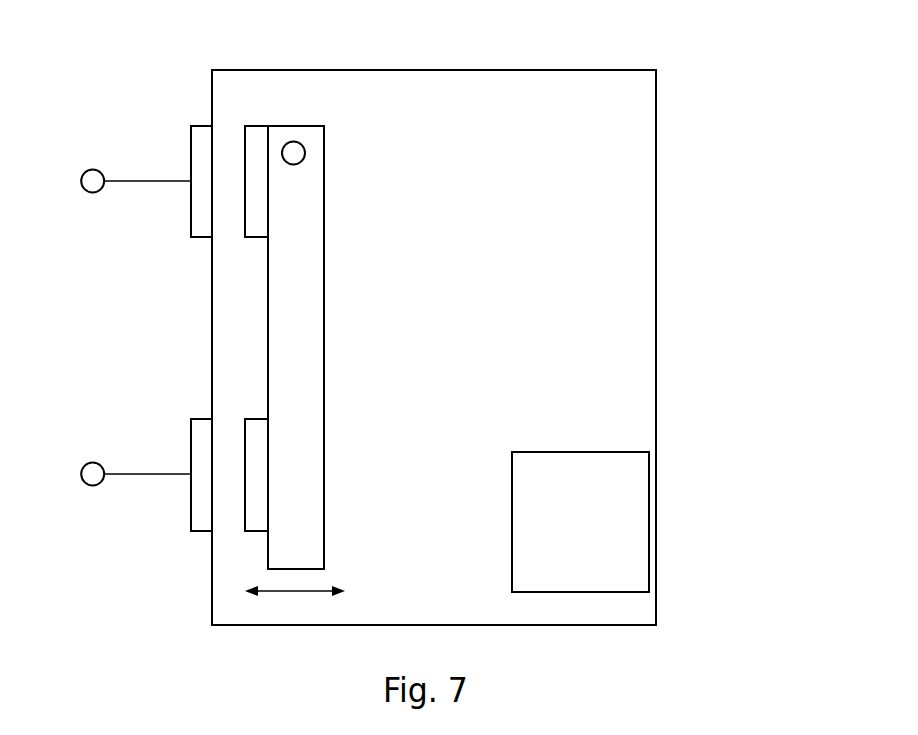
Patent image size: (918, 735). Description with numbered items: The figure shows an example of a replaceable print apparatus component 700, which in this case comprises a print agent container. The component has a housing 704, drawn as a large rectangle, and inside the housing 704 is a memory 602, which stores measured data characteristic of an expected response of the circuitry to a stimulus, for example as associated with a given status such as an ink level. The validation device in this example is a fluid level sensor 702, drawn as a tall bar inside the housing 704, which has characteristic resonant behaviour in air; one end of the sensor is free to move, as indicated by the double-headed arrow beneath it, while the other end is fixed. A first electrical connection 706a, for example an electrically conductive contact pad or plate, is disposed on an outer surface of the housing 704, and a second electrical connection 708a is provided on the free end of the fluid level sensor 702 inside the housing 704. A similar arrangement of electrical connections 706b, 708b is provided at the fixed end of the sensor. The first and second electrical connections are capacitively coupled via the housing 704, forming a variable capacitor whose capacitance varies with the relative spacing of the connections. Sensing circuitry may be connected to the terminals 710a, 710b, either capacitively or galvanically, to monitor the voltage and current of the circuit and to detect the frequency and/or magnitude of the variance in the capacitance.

The replaceable print apparatus component 700 is at (140, 81).
The fluid level sensor 702 is at (303, 360).
The housing 704 is at (656, 300).
The first electrical connection 706a is at (191, 531).
The first electrical connection 706b is at (191, 236).
The second electrical connection 708a is at (253, 445).
The second electrical connection 708b is at (245, 152).
The terminal 710a is at (93, 462).
The terminal 710b is at (93, 169).
The memory 602 is at (580, 522).